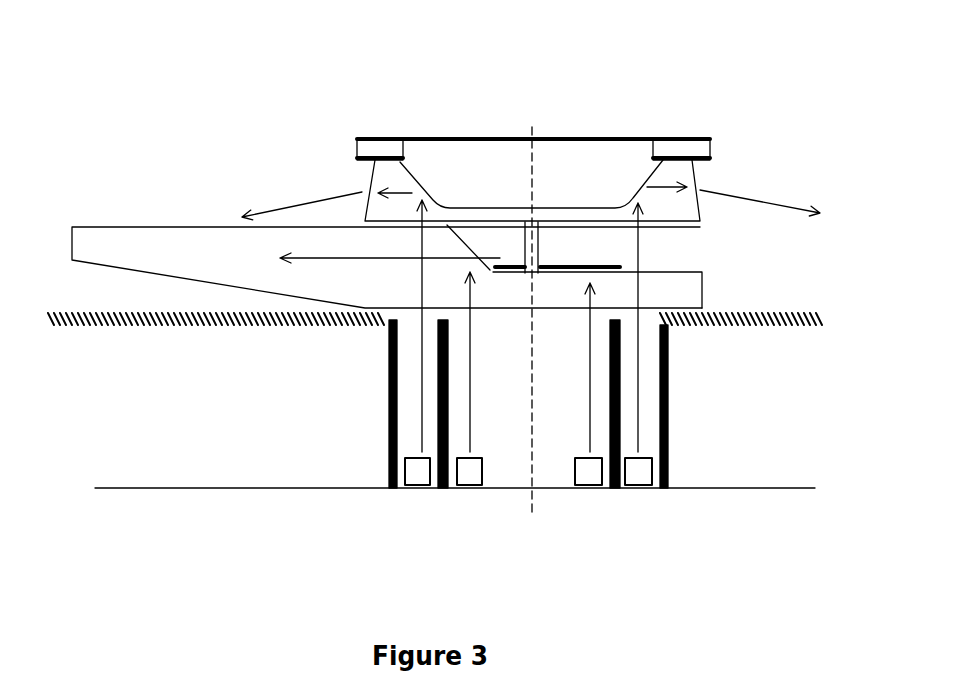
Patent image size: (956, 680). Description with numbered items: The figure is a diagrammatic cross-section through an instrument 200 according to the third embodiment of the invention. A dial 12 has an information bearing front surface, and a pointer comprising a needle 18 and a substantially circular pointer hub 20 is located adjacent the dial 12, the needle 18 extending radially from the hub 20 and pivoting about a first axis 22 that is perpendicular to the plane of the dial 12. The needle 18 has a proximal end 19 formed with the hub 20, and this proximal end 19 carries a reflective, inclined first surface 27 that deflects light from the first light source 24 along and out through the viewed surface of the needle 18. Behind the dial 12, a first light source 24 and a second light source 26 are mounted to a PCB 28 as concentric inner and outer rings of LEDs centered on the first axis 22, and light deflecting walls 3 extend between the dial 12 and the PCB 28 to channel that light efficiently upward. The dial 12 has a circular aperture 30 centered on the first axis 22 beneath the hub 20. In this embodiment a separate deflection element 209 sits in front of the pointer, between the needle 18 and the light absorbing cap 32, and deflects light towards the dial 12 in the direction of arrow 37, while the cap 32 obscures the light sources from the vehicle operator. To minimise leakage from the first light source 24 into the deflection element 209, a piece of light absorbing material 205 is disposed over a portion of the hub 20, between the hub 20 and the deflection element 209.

The instrument 200 is at (167, 78).
The deflection element 209 is at (357, 166).
The light absorbing cap 32 is at (710, 147).
The proximal end 19 is at (432, 244).
The first surface 27 is at (468, 222).
The first axis 22 is at (533, 128).
The aperture 30 is at (570, 318).
The light absorbing material 205 is at (600, 264).
The needle 18 is at (114, 245).
The pointer hub 20 is at (707, 294).
The direction of light towards the dial 37 is at (270, 208).
The dial 12 is at (190, 320).
The light deflecting walls 3 is at (395, 392).
The PCB 28 is at (282, 490).
The second light source 26 is at (418, 468).
The first light source 24 is at (593, 478).